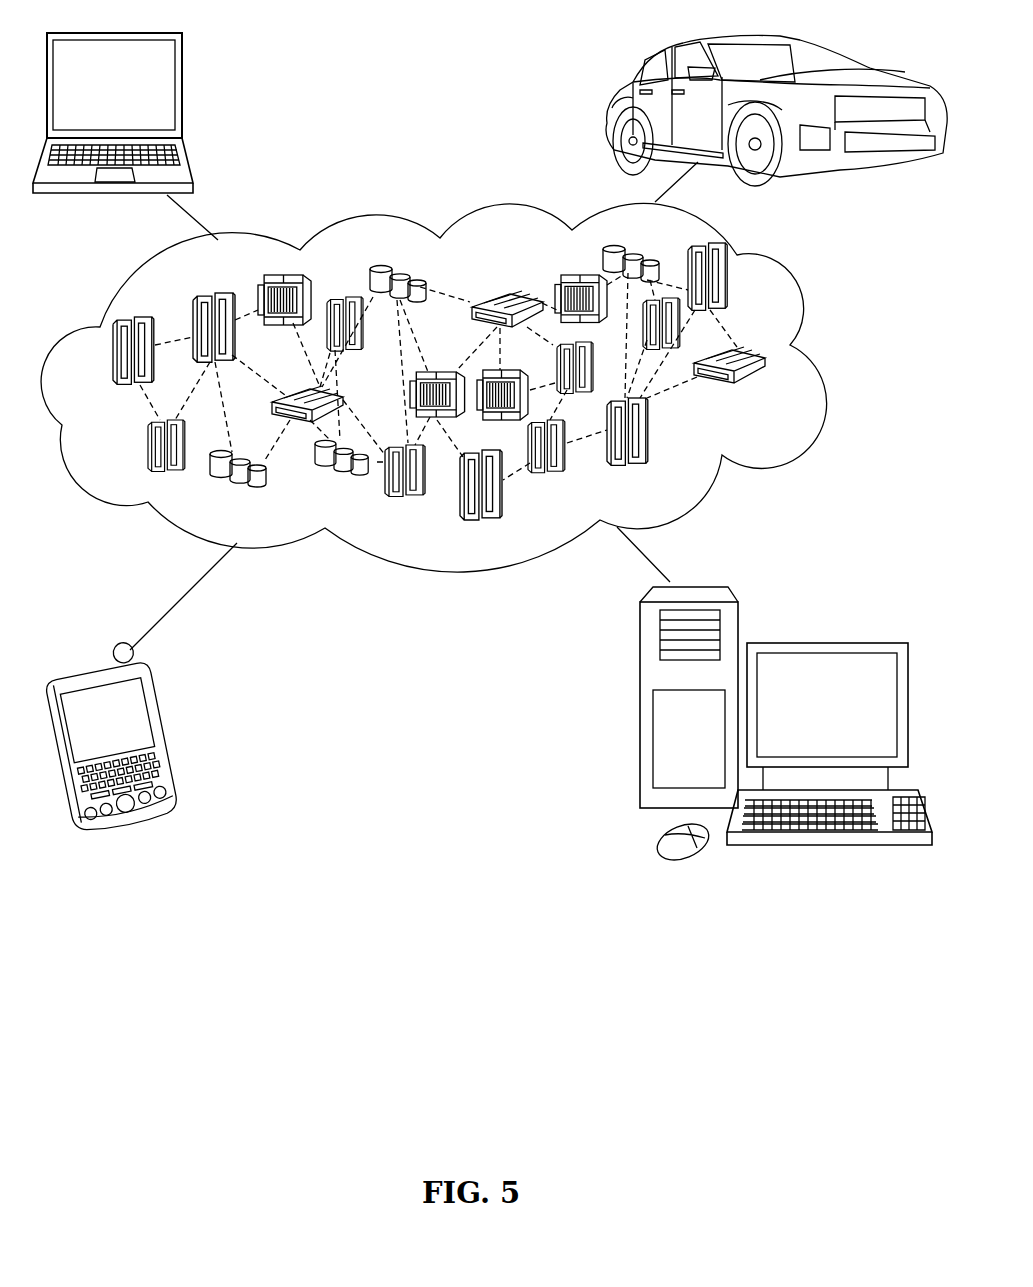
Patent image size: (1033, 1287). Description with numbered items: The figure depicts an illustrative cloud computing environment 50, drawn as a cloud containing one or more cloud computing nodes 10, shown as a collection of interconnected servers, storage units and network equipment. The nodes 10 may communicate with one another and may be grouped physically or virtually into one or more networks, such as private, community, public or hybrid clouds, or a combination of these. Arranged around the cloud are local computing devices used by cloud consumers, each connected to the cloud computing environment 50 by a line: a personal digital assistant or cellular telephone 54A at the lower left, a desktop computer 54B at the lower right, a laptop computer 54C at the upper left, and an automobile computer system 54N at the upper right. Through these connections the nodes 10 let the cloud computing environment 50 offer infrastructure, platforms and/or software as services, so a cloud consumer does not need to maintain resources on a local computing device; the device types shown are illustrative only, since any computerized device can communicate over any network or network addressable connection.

The cloud computing node 10 is at (766, 389).
The cloud computing environment 50 is at (825, 358).
The personal digital assistant or cellular telephone 54A is at (170, 733).
The desktop computer 54B is at (823, 643).
The laptop computer 54C is at (182, 93).
The automobile computer system 54N is at (607, 108).